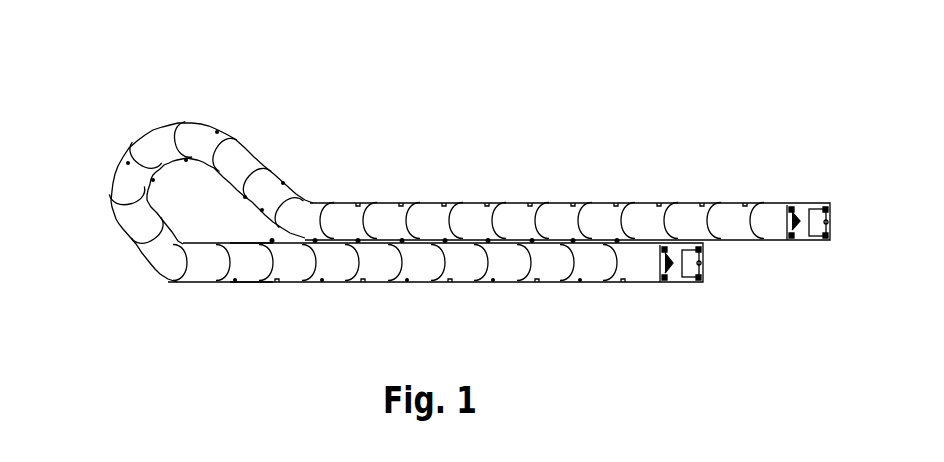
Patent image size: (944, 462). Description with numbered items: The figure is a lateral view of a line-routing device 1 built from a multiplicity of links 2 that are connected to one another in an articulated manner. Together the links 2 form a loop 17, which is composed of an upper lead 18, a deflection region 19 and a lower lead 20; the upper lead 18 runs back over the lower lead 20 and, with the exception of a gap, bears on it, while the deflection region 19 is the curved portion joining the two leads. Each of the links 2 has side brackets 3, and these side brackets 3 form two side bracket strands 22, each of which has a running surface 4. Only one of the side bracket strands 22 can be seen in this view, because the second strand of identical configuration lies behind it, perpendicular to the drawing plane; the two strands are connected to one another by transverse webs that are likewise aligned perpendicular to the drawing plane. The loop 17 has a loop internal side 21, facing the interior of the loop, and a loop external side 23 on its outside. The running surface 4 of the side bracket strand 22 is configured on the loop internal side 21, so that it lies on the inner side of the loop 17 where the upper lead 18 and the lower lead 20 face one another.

The line-routing device 1 is at (700, 82).
The links 2 is at (204, 135).
The side brackets 3 is at (248, 295).
The running surface 4 is at (226, 201).
The loop 17 is at (128, 96).
The upper lead 18 is at (561, 203).
The deflection region 19 is at (258, 137).
The lower lead 20 is at (583, 282).
The loop internal side 21 is at (158, 185).
The side bracket strands 22 is at (252, 267).
The loop external side 23 is at (115, 172).